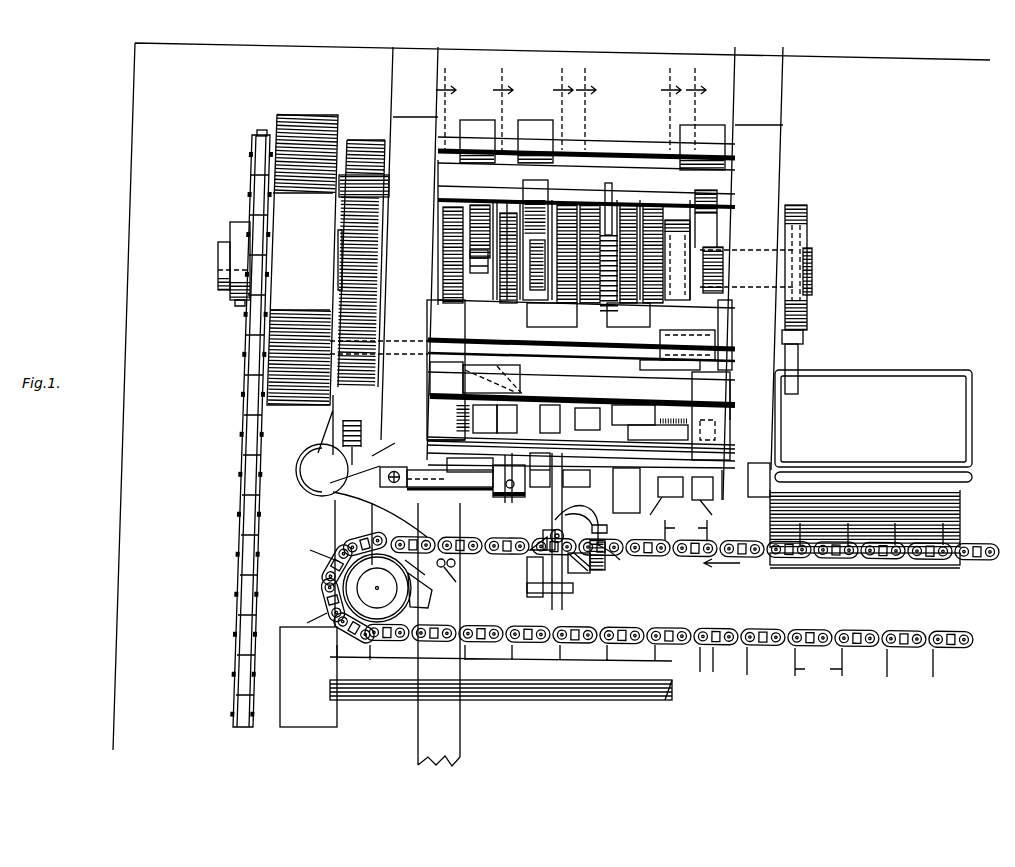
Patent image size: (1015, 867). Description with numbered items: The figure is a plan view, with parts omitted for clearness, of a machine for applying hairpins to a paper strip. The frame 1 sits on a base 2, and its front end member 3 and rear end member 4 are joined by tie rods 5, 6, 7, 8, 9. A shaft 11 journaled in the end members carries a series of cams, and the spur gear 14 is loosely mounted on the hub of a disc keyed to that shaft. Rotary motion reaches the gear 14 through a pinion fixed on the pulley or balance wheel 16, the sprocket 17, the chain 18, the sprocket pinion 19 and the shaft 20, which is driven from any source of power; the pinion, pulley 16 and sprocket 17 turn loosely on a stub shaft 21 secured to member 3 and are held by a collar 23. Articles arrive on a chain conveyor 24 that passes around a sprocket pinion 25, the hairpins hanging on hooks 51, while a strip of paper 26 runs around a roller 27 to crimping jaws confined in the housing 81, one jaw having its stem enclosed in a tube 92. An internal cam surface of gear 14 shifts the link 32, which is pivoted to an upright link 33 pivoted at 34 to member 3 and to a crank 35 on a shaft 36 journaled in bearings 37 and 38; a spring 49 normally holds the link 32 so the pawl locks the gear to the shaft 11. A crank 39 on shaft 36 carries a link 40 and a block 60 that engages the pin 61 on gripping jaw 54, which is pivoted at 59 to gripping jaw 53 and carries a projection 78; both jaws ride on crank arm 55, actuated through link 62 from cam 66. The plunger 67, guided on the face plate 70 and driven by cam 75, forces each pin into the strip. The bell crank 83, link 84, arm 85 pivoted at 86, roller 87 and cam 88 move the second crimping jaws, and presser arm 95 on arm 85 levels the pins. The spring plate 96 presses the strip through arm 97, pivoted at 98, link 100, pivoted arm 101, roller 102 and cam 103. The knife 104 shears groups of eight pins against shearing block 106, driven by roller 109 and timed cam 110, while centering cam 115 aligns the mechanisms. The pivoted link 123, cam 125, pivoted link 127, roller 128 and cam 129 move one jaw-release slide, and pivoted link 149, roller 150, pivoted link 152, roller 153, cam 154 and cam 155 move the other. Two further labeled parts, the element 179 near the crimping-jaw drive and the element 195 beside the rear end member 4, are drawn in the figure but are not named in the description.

The frame 1 is at (777, 139).
The base 2 is at (139, 265).
The front end member 3 is at (390, 122).
The rear end member 4 is at (793, 160).
The tie rod 5 is at (640, 130).
The tie rod 6 is at (430, 328).
The tie rod 7 is at (648, 385).
The tie rod 8 is at (671, 107).
The tie rod 9 is at (696, 107).
The shaft 11 is at (813, 278).
The spur gear 14 is at (380, 155).
The pulley or balance wheel 16 is at (314, 120).
The sprocket 17 is at (260, 133).
The chain 18 is at (236, 492).
The sprocket pinion 19 is at (250, 725).
The shaft 20 is at (504, 700).
The stub shaft 21 is at (225, 287).
The collar 23 is at (218, 314).
The chain conveyor 24 is at (708, 568).
The sprocket pinion 25 is at (432, 596).
The strip of paper 26 is at (340, 487).
The roller 27 is at (316, 484).
The link 32 is at (333, 425).
The upright link 33 is at (340, 198).
The pivot 34 is at (380, 188).
The crank 35 is at (403, 530).
The shaft 36 is at (494, 491).
The bearing 37 is at (394, 467).
The bearing 38 is at (541, 442).
The crank 39 is at (520, 510).
The link 40 is at (537, 570).
The spring 49 is at (364, 439).
The hooks 51 is at (631, 601).
The gripping jaw 53 is at (583, 559).
The gripping jaw 54 is at (578, 526).
The crank arm 55 is at (565, 455).
The pivot 59 is at (543, 550).
The block 60 is at (547, 540).
The pin 61 is at (565, 513).
The link 62 is at (567, 363).
The cam 66 is at (566, 254).
The plunger 67 is at (576, 479).
The face plate 70 is at (446, 442).
The cam 75 is at (614, 208).
The projection 78 is at (568, 512).
The housing 81 is at (450, 473).
The bell crank 83 is at (658, 433).
The link 84 is at (728, 440).
The arm 85 is at (732, 346).
The pivot 86 is at (702, 126).
The roller 87 is at (720, 253).
The cam 88 is at (718, 228).
The tube 92 is at (467, 400).
The presser arm 95 is at (749, 484).
The spring plate 96 is at (668, 500).
The arm 97 is at (690, 428).
The pivot 98 is at (739, 495).
The link 100 is at (670, 370).
The pivoted arm 101 is at (687, 345).
The roller 102 is at (674, 266).
The cam 103 is at (677, 260).
The knife 104 is at (785, 468).
The shearing block 106 is at (780, 480).
The roller 109 is at (805, 208).
The timed cam 110 is at (801, 343).
The centering cam 115 is at (622, 274).
The pivoted link 123 is at (469, 178).
The cam 125 is at (451, 255).
The pivoted link 127 is at (507, 237).
The roller 128 is at (475, 241).
The cam 129 is at (493, 258).
The pivoted link 149 is at (516, 406).
The roller 150 is at (519, 274).
The pivoted link 152 is at (586, 196).
The roller 153 is at (530, 242).
The cam 154 is at (503, 298).
The cam 155 is at (548, 193).
The block 179 is at (633, 415).
The plate 195 is at (730, 400).